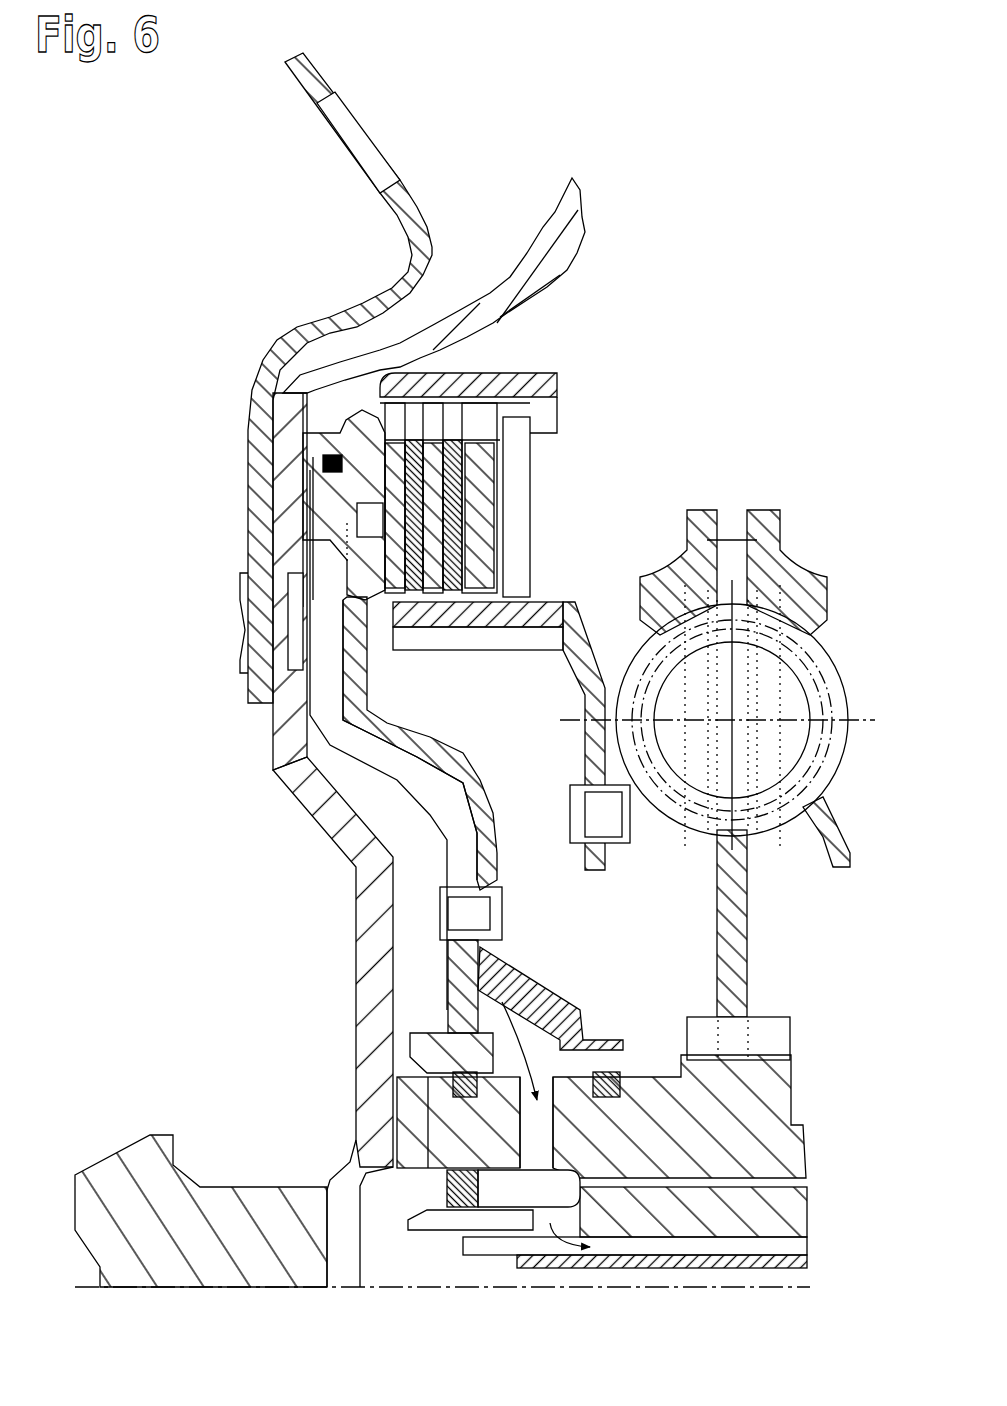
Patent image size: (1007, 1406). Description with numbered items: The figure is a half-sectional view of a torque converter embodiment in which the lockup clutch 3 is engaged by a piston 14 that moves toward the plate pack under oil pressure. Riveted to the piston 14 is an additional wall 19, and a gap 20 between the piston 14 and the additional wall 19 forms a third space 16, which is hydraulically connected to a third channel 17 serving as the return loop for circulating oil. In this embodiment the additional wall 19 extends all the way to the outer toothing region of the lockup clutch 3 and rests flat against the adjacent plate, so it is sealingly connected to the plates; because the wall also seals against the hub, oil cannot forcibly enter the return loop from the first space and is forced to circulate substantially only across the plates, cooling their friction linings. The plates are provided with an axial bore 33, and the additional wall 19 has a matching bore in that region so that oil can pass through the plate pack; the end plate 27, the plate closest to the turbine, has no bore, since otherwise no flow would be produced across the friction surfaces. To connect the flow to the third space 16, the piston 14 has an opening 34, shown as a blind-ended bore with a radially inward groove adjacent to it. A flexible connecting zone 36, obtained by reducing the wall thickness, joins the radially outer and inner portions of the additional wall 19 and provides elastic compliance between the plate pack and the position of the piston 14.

The lockup clutch 3 is at (509, 581).
The piston 14 is at (337, 733).
The third space 16 is at (480, 833).
The third channel 17 is at (538, 1145).
The additional wall 19 is at (430, 732).
The gap 20 is at (473, 763).
The end plate 27 is at (478, 482).
The axial bore 33 is at (470, 522).
The opening 34 is at (370, 517).
The flexible connecting zone 36 is at (350, 637).